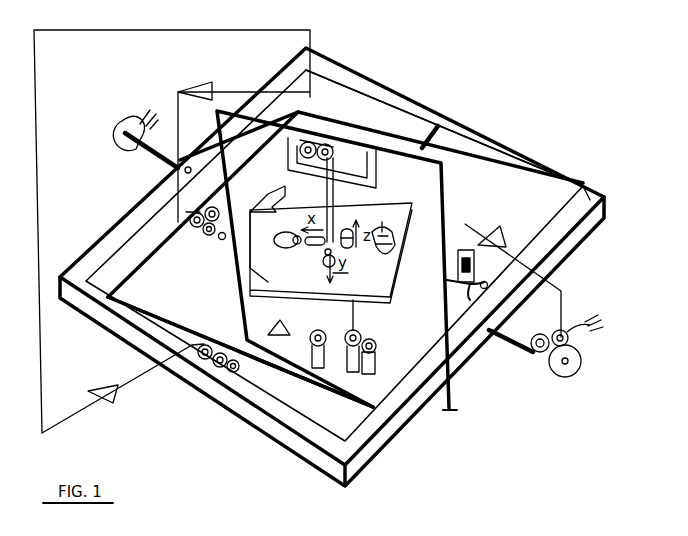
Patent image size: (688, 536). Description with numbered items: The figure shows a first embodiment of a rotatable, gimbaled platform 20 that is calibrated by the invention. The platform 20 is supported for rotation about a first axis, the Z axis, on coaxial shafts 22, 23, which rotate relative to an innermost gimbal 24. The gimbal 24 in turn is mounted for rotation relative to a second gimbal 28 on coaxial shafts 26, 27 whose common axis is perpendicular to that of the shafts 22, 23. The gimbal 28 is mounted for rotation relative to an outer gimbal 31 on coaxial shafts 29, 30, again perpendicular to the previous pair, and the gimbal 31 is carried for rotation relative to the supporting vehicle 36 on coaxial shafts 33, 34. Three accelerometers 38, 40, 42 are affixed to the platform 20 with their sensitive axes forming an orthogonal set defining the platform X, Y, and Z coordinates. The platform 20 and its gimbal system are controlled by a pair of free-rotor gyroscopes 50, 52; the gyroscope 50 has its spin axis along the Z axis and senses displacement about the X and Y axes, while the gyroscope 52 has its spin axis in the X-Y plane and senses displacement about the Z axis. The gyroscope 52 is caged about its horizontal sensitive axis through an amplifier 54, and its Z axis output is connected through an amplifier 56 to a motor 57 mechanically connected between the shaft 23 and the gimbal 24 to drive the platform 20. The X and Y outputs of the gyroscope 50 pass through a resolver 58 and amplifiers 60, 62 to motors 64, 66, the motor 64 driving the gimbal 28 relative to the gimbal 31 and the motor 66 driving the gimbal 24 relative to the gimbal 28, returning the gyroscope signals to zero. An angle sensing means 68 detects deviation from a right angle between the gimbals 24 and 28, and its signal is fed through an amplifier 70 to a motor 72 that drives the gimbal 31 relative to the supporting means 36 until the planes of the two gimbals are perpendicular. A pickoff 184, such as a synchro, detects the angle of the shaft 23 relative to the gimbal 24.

The rotatable gimbaled platform 20 is at (390, 210).
The shaft 22 is at (338, 165).
The shaft 23 is at (357, 330).
The gimbal 24 is at (446, 196).
The shaft 26 is at (446, 297).
The shaft 27 is at (220, 240).
The gimbal 28 is at (345, 388).
The shaft 29 is at (428, 130).
The shaft 30 is at (242, 366).
The gimbal 31 is at (453, 135).
The shaft 33 is at (510, 345).
The shaft 34 is at (153, 152).
The supporting vehicle 36 is at (565, 378).
The accelerometer 38 is at (310, 246).
The accelerometer 40 is at (323, 262).
The accelerometer 42 is at (348, 228).
The free-rotor gyroscope 50 is at (396, 240).
The free-rotor gyroscope 52 is at (290, 233).
The amplifier 54 is at (262, 195).
The amplifier 56 is at (284, 328).
The motor 57 is at (320, 330).
The resolver 58 is at (330, 130).
The amplifier 60 is at (120, 398).
The amplifier 62 is at (214, 83).
The motor 64 is at (192, 372).
The motor 66 is at (195, 230).
The angle sensing means 68 is at (460, 248).
The amplifier 70 is at (496, 234).
The motor 72 is at (576, 358).
The pickoff 184 is at (376, 366).